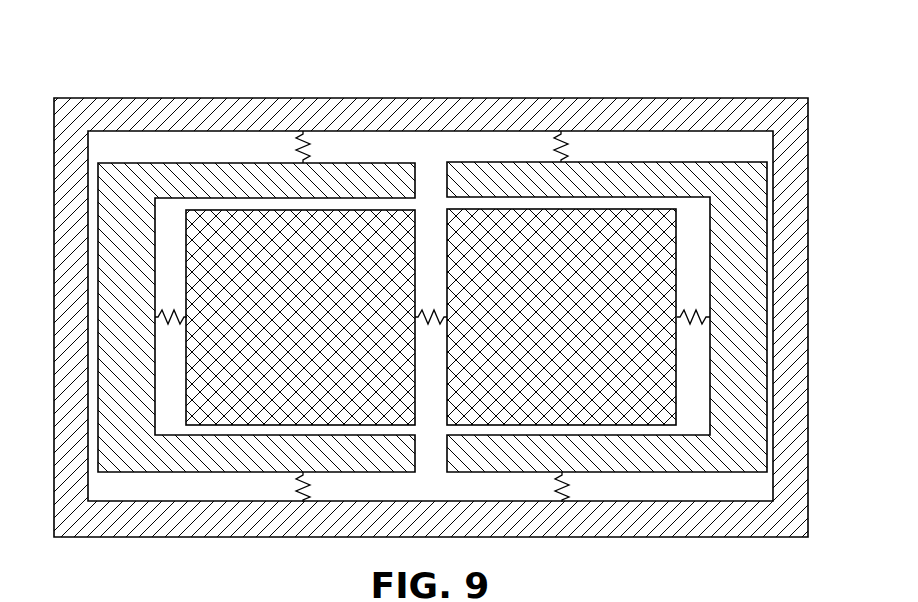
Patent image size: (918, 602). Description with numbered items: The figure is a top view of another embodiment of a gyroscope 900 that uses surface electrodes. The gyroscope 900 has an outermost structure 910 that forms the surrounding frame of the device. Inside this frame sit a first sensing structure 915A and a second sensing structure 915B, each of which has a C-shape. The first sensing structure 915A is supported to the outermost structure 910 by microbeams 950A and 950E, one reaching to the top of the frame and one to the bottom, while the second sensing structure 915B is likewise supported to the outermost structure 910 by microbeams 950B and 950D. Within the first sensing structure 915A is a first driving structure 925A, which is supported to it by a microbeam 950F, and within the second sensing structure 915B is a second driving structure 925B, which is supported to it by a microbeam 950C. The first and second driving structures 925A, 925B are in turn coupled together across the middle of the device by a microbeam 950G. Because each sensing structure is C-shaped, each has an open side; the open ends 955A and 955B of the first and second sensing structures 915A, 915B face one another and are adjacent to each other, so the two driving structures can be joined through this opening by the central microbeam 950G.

The gyroscope 900 is at (431, 299).
The outermost structure 910 is at (426, 108).
The first sensing structure 915A is at (272, 190).
The second sensing structure 915B is at (623, 193).
The first driving structure 925A is at (253, 243).
The second driving structure 925B is at (657, 238).
The microbeam 950A is at (303, 131).
The microbeam 950B is at (561, 131).
The microbeam 950C is at (676, 318).
The microbeam 950D is at (562, 502).
The microbeam 950E is at (308, 502).
The microbeam 950F is at (187, 316).
The microbeam 950G is at (448, 316).
The open end 955A is at (418, 198).
The open end 955B is at (439, 439).